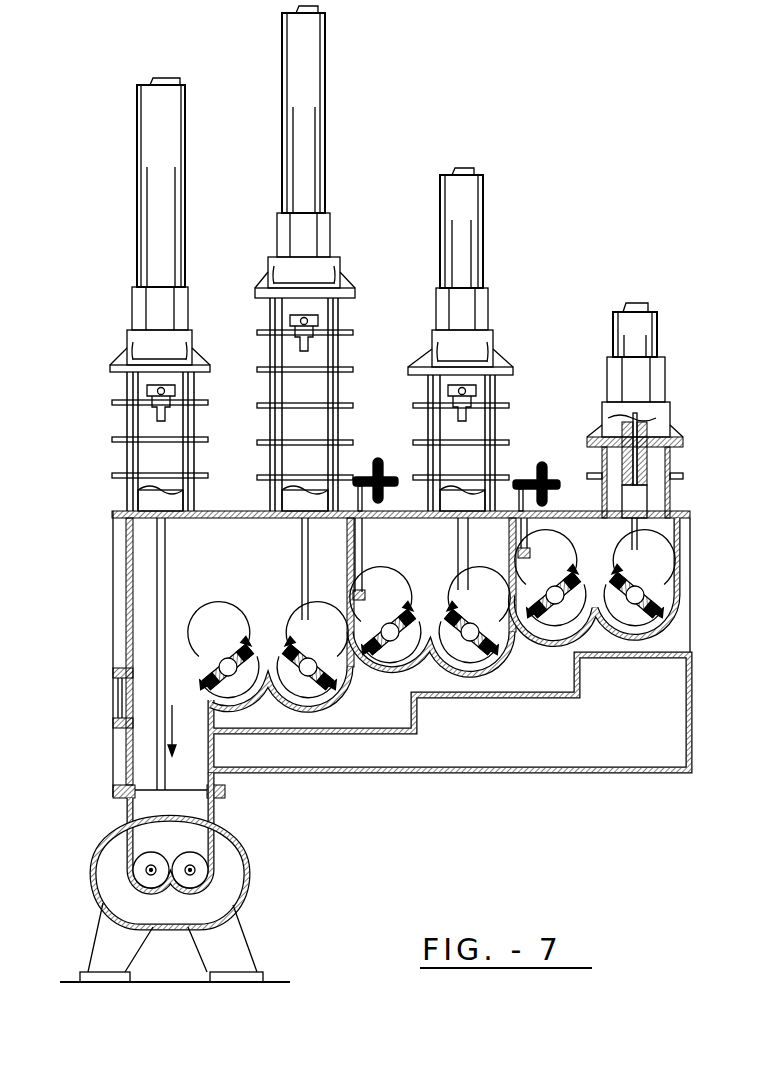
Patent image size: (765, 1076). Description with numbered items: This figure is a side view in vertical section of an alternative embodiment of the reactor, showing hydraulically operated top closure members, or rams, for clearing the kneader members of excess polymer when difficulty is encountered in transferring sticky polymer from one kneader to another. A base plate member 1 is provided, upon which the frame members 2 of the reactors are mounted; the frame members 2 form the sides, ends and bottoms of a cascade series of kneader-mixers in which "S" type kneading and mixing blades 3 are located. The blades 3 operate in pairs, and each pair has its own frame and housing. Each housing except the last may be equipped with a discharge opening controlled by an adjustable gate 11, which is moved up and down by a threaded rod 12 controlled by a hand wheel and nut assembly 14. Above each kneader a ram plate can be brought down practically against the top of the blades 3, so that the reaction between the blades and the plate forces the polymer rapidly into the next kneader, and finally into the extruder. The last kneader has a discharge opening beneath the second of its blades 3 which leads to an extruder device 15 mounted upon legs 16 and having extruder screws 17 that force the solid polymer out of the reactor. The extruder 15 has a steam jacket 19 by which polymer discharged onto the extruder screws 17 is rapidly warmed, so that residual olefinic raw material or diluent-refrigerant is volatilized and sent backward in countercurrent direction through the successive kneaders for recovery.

The base plate member 1 is at (487, 774).
The frame members 2 is at (256, 704).
The kneading and mixing blades 3 is at (247, 652).
The adjustable gate 11 is at (347, 566).
The threaded rod 12 is at (364, 556).
The hand wheel and nut assembly 14 is at (380, 465).
The extruder device 15 is at (246, 848).
The legs 16 is at (215, 958).
The extruder screws 17 is at (189, 852).
The steam jacket 19 is at (227, 883).